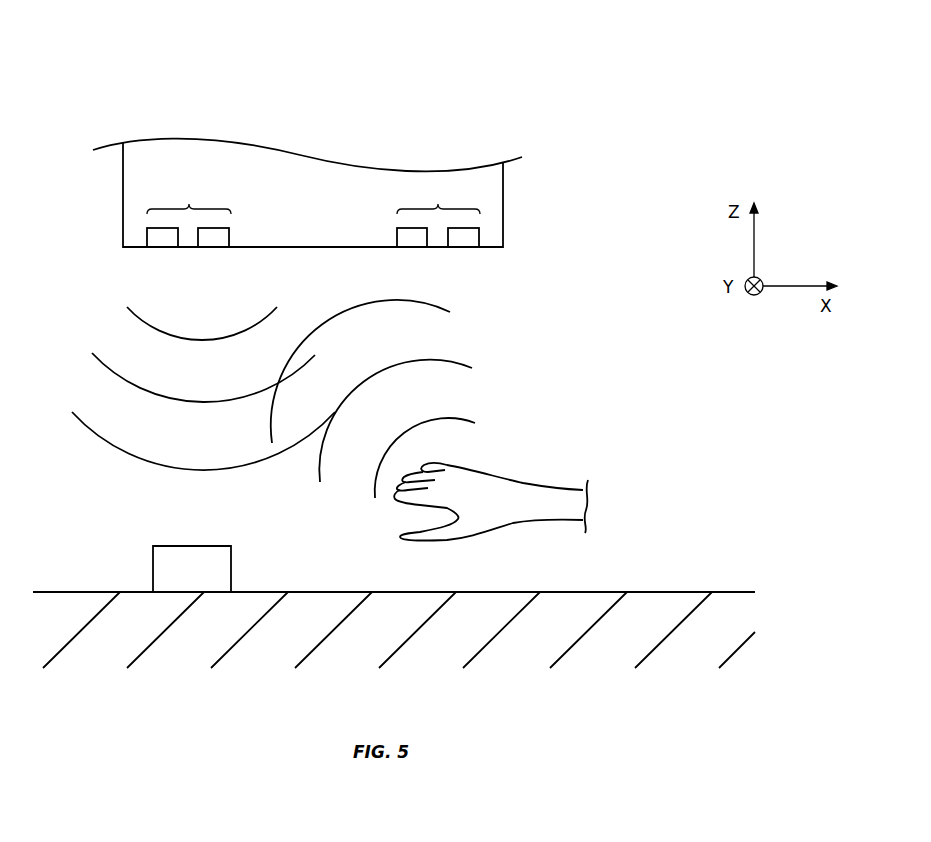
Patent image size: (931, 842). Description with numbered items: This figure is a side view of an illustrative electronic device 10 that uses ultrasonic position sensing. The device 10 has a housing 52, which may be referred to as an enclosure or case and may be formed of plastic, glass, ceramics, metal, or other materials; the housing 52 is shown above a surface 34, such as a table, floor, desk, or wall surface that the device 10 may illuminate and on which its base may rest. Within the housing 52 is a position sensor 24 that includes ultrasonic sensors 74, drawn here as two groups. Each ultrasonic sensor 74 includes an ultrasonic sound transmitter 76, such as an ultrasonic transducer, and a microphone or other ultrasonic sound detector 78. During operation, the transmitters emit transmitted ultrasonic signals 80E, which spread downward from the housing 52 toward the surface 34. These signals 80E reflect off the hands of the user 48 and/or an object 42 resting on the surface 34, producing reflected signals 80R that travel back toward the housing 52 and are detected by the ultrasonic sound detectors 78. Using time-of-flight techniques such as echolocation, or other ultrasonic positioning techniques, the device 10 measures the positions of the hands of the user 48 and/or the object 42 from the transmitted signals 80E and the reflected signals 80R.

The electronic device 10 is at (434, 78).
The position sensor 24 is at (202, 172).
The surface 34 is at (663, 605).
The object 42 is at (219, 545).
The user 48 is at (523, 490).
The housing 52 is at (491, 218).
The ultrasonic sensor 74 is at (313, 199).
The ultrasonic sound transmitter 76 is at (163, 240).
The ultrasonic sound detector 78 is at (208, 240).
The transmitted ultrasonic signals 80E is at (110, 450).
The reflected signals 80R is at (433, 360).